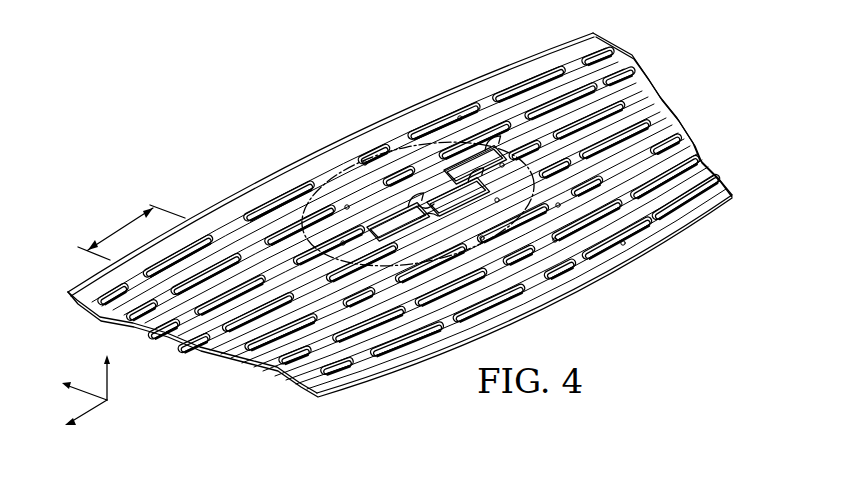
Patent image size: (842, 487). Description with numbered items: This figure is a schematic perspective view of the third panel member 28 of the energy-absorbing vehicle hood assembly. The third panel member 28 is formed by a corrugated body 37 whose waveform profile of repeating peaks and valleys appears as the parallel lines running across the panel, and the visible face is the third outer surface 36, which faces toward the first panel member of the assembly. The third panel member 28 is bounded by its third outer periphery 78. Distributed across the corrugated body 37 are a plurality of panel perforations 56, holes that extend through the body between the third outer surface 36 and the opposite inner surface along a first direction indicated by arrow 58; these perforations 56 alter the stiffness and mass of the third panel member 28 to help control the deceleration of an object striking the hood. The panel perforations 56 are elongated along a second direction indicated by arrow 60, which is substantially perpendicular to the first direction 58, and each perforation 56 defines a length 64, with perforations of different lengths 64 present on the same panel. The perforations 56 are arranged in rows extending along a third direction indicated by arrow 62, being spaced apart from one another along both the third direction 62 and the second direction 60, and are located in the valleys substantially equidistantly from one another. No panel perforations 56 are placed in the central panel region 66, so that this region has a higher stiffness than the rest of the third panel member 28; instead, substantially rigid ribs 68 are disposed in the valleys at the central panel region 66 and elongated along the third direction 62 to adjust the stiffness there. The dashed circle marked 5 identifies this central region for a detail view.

The third panel member 28 is at (408, 219).
The third outer surface 36 is at (341, 145).
The corrugated body 37 is at (657, 133).
The panel perforations 56 is at (550, 84).
The arrow indicating first direction 58 is at (109, 392).
The arrow indicating second direction 60 is at (97, 410).
The arrow indicating third direction 62 is at (82, 390).
The length 64 is at (124, 224).
The central panel region 66 is at (446, 166).
The ribs 68 is at (352, 212).
The third outer periphery 78 is at (253, 363).
The detail region shown in FIG. 5 is at (546, 194).